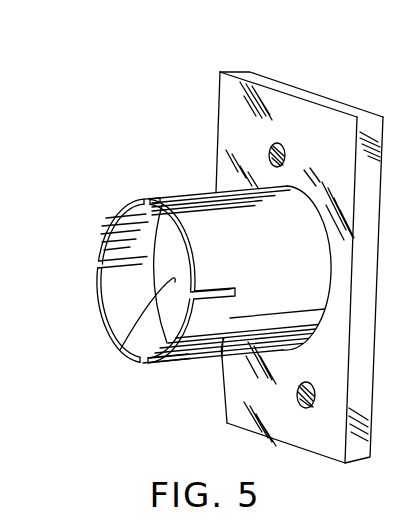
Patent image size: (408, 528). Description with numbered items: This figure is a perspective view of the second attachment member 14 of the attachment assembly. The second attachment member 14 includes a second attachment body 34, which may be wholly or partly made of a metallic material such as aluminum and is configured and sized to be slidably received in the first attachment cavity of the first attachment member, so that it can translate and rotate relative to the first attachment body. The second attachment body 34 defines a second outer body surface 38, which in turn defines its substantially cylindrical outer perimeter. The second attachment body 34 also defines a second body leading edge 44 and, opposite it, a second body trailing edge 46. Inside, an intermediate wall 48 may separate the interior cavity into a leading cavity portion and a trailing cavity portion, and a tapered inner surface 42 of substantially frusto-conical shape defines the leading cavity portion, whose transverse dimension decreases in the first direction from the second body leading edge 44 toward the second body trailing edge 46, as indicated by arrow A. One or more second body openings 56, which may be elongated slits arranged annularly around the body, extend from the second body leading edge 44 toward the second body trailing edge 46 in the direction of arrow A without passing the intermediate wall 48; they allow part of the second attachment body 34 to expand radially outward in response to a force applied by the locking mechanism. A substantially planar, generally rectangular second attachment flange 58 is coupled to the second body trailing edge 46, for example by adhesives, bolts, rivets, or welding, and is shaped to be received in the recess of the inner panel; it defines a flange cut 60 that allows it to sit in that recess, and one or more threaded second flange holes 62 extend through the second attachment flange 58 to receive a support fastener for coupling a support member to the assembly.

The second attachment member 14 is at (357, 417).
The second attachment body 34 is at (183, 363).
The second outer body surface 38 is at (217, 357).
The tapered inner surface 42 is at (136, 230).
The second body leading edge 44 is at (128, 200).
The second body trailing edge 46 is at (278, 183).
The intermediate wall 48 is at (120, 350).
The second body openings 56 is at (97, 265).
The second attachment flange 58 is at (250, 73).
The flange cut 60 is at (225, 403).
The second flange holes 62 is at (277, 143).
The arrow A is at (87, 288).